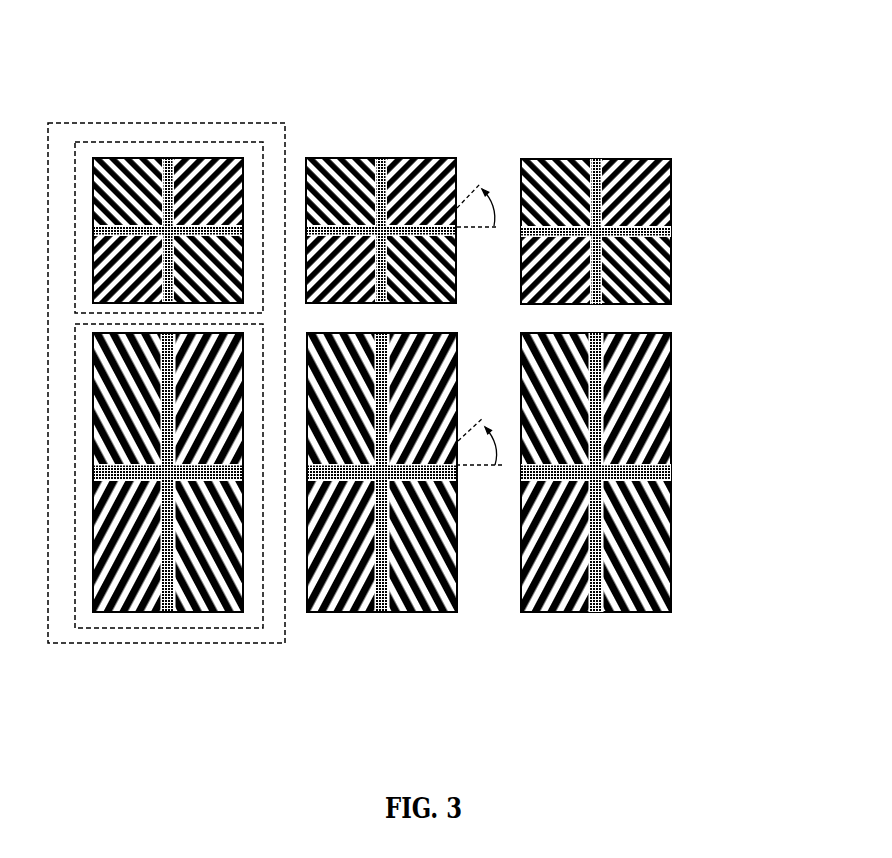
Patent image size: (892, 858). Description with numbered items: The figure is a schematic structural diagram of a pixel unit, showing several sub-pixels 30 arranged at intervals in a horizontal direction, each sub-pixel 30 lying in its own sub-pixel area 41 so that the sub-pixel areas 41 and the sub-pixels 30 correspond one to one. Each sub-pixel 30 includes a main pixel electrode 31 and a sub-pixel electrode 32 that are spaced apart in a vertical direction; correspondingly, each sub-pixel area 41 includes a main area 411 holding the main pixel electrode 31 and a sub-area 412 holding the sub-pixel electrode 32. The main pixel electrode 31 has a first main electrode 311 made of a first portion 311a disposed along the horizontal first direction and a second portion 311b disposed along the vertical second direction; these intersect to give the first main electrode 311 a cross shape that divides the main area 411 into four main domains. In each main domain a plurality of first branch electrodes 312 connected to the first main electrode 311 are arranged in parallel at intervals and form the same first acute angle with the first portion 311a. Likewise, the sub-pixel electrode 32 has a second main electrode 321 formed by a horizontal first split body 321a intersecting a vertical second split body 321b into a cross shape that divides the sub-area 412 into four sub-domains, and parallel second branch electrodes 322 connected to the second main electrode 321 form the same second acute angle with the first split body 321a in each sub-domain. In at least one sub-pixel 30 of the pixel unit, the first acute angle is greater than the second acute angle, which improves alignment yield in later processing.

The sub-pixel 30 is at (566, 376).
The main pixel electrode 31 is at (640, 172).
The first main electrode 311 is at (603, 172).
The first portion 311a is at (625, 207).
The second portion 311b is at (592, 158).
The first branch electrode 312 is at (671, 197).
The sub-pixel electrode 32 is at (674, 511).
The second main electrode 321 is at (674, 472).
The first split body 321a is at (671, 477).
The second split body 321b is at (640, 512).
The second branch electrode 322 is at (671, 397).
The sub-pixel area 41 is at (166, 375).
The main area 411 is at (168, 141).
The sub-area 412 is at (158, 629).